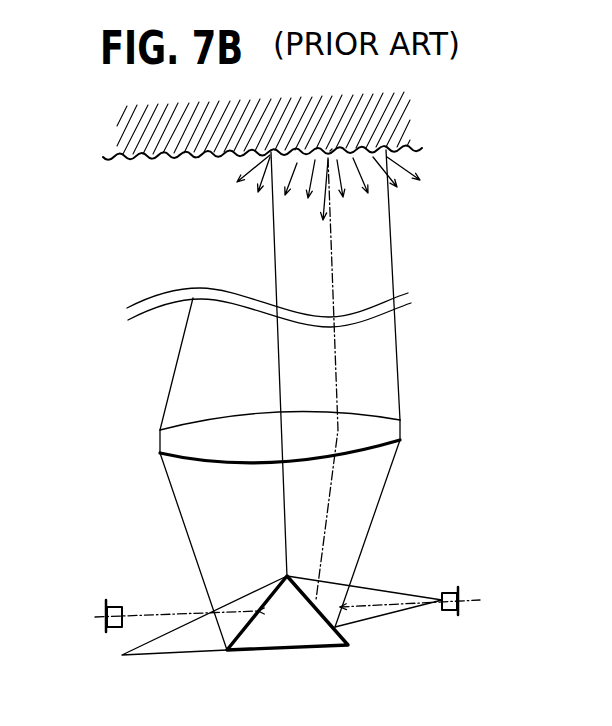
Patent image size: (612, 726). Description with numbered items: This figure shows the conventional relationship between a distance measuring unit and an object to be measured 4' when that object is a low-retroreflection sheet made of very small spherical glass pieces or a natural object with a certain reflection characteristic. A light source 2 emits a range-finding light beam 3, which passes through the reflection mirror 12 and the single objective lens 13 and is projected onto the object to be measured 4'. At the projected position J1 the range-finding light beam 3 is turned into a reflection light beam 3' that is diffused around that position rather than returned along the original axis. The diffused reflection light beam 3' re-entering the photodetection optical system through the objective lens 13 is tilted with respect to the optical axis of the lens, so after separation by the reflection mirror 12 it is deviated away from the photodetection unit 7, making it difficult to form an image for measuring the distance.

The object to be measured 4' is at (233, 126).
The projected position J1 is at (330, 151).
The range-finding light beam 3 is at (353, 375).
The reflection light beam 3' is at (241, 474).
The objective lens 13 is at (402, 427).
The reflection mirror 12 is at (283, 648).
The photodetection unit 7 is at (110, 606).
The light source 2 is at (448, 590).